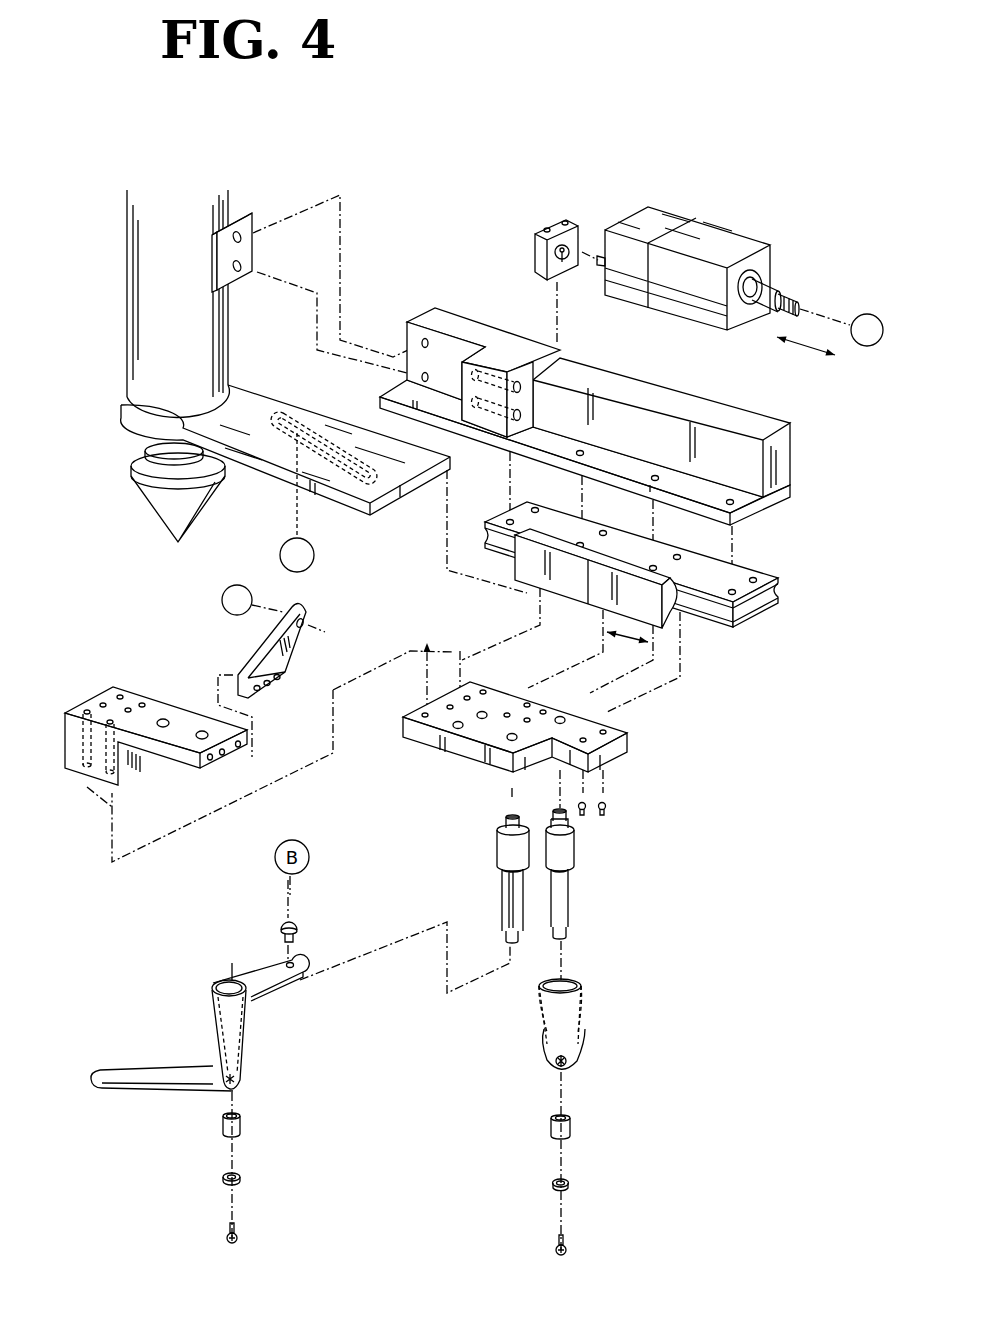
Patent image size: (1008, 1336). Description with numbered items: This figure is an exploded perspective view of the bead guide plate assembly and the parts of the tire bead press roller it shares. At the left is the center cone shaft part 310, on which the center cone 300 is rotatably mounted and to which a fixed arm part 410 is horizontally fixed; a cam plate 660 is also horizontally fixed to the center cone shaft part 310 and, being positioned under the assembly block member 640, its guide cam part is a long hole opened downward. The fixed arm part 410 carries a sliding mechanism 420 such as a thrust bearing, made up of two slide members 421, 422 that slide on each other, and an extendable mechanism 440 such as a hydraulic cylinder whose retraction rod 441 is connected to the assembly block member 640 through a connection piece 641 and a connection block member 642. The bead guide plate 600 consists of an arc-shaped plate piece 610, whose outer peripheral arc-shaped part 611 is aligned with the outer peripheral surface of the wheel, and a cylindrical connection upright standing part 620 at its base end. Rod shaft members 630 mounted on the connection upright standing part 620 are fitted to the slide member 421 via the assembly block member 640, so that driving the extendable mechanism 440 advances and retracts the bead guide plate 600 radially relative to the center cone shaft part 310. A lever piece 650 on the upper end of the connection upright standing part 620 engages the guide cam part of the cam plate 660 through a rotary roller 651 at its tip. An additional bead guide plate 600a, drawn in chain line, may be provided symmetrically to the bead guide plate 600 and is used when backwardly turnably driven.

The center cone shaft part 310 is at (130, 322).
The cam plate 660 is at (120, 398).
The center cone 300 is at (170, 512).
The outer peripheral arc-shaped part 611 is at (353, 513).
The fixed arm part 410 is at (473, 317).
The extendable mechanism 440 is at (728, 232).
The retraction rod 441 is at (768, 272).
The slide member 422 is at (747, 567).
The slide member 421 is at (677, 627).
The sliding mechanism 420 is at (548, 602).
The assembly block member 640 is at (463, 745).
The connection piece 641 is at (253, 652).
The connection block member 642 is at (147, 715).
The rod shaft members 630 is at (501, 890).
The rotary roller 651 is at (285, 922).
The lever piece 650 is at (282, 984).
The cylindrical connection upright standing part 620 is at (212, 1033).
The arc-shaped plate piece 610 is at (162, 1067).
The bead guide plate 600 is at (148, 1090).
The additional bead guide plate 600a is at (596, 1065).